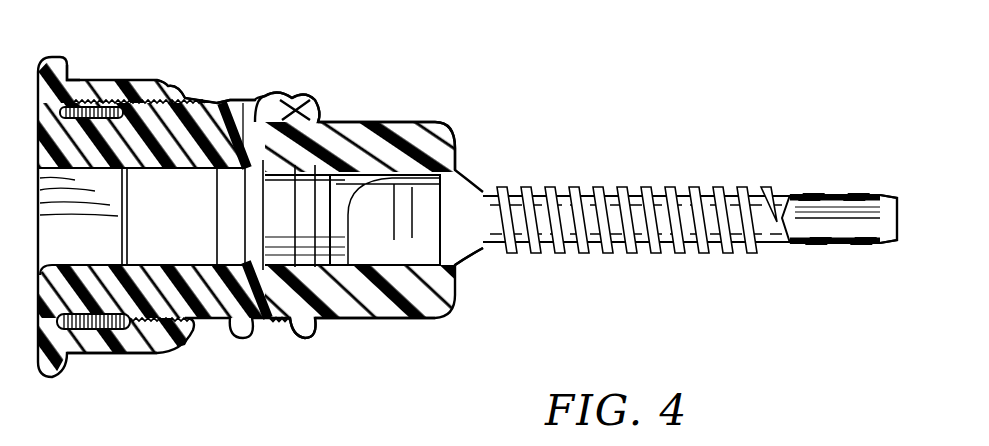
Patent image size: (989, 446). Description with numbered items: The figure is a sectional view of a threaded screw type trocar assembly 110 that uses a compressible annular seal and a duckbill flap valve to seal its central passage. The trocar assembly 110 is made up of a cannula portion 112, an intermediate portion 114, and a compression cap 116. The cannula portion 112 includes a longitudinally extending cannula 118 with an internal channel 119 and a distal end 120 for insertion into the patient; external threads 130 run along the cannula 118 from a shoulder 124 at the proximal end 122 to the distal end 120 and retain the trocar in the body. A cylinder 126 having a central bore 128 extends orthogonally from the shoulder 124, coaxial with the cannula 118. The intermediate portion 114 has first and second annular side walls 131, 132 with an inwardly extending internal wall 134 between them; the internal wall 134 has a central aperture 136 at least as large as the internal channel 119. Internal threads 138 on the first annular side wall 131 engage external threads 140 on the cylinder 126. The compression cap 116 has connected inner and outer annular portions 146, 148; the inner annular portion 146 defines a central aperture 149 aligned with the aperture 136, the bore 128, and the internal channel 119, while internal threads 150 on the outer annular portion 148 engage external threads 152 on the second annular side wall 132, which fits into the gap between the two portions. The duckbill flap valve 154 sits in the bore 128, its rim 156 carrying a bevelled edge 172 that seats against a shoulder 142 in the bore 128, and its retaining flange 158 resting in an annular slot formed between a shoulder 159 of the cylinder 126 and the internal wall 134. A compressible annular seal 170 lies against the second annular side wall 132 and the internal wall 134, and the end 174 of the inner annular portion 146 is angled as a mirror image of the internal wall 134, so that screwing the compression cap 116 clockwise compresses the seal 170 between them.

The trocar assembly 110 is at (432, 82).
The cannula portion 112 is at (599, 181).
The intermediate portion 114 is at (219, 79).
The compression cap 116 is at (74, 77).
The cannula 118 is at (820, 193).
The internal channel 119 is at (815, 225).
The distal end 120 is at (886, 193).
The proximal end 122 is at (483, 258).
The shoulder 124 is at (458, 140).
The cylinder 126 is at (388, 121).
The central bore 128 is at (458, 163).
The external threads 130 is at (699, 190).
The first annular side wall 131 is at (280, 343).
The second annular side wall 132 is at (183, 102).
The internal wall 134 is at (233, 128).
The central aperture 136 is at (240, 170).
The internal threads 138 is at (335, 95).
The external threads 140 is at (283, 93).
The shoulder 142 is at (352, 220).
The inner annular portion 146 is at (75, 160).
The outer annular portion 148 is at (103, 344).
The central aperture 149 is at (97, 270).
The internal threads 150 is at (132, 330).
The external threads 152 is at (185, 332).
The duckbill flap valve 154 is at (412, 318).
The rim 156 is at (303, 211).
The retaining flange 158 is at (295, 238).
The shoulder 159 is at (340, 320).
The compressible annular seal 170 is at (190, 262).
The bevelled edge 172 is at (210, 170).
The end of the inner annular portion 174 is at (172, 100).